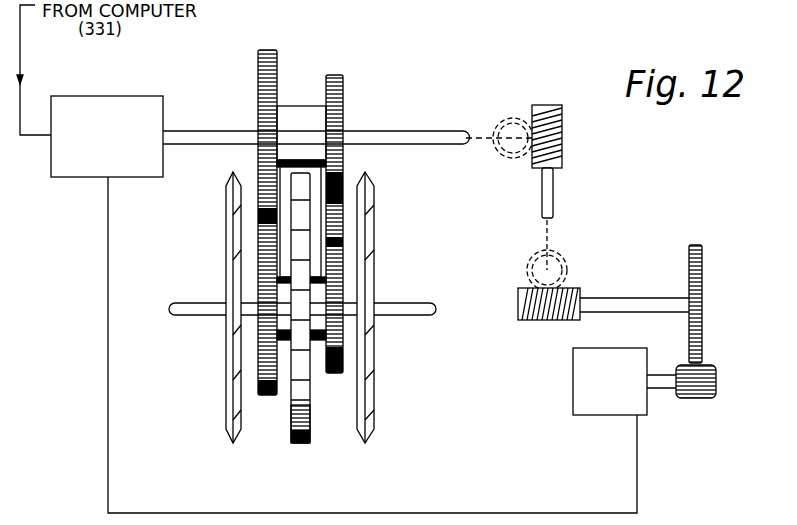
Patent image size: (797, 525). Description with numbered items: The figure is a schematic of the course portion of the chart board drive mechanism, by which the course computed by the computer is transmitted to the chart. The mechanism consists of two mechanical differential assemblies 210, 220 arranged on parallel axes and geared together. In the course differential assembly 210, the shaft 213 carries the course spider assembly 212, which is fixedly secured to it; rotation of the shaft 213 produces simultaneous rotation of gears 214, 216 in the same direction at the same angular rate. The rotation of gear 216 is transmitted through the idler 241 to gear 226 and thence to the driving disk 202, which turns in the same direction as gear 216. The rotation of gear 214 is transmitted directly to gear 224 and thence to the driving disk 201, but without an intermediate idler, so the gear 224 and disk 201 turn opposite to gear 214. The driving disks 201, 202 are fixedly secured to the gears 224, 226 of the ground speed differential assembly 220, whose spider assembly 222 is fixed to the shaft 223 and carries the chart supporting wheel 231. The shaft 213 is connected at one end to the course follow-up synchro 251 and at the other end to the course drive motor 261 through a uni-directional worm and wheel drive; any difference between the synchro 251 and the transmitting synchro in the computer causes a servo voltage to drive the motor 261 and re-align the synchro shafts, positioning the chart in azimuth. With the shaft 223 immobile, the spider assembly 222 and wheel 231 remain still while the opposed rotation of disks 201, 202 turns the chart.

The driving disk 201 is at (228, 410).
The driving disk 202 is at (371, 385).
The course differential assembly 210 is at (299, 88).
The course spider assembly 212 is at (306, 106).
The shaft 213 is at (417, 133).
The gear 214 is at (262, 70).
The gear 216 is at (343, 97).
The ground speed differential assembly 220 is at (326, 436).
The spider assembly 222 is at (316, 322).
The shaft 223 is at (400, 310).
The gear 224 is at (262, 397).
The gear 226 is at (338, 365).
The chart supporting wheel 231 is at (300, 444).
The idler 241 is at (343, 212).
The course follow-up synchro 251 is at (122, 105).
The course drive motor 261 is at (608, 403).